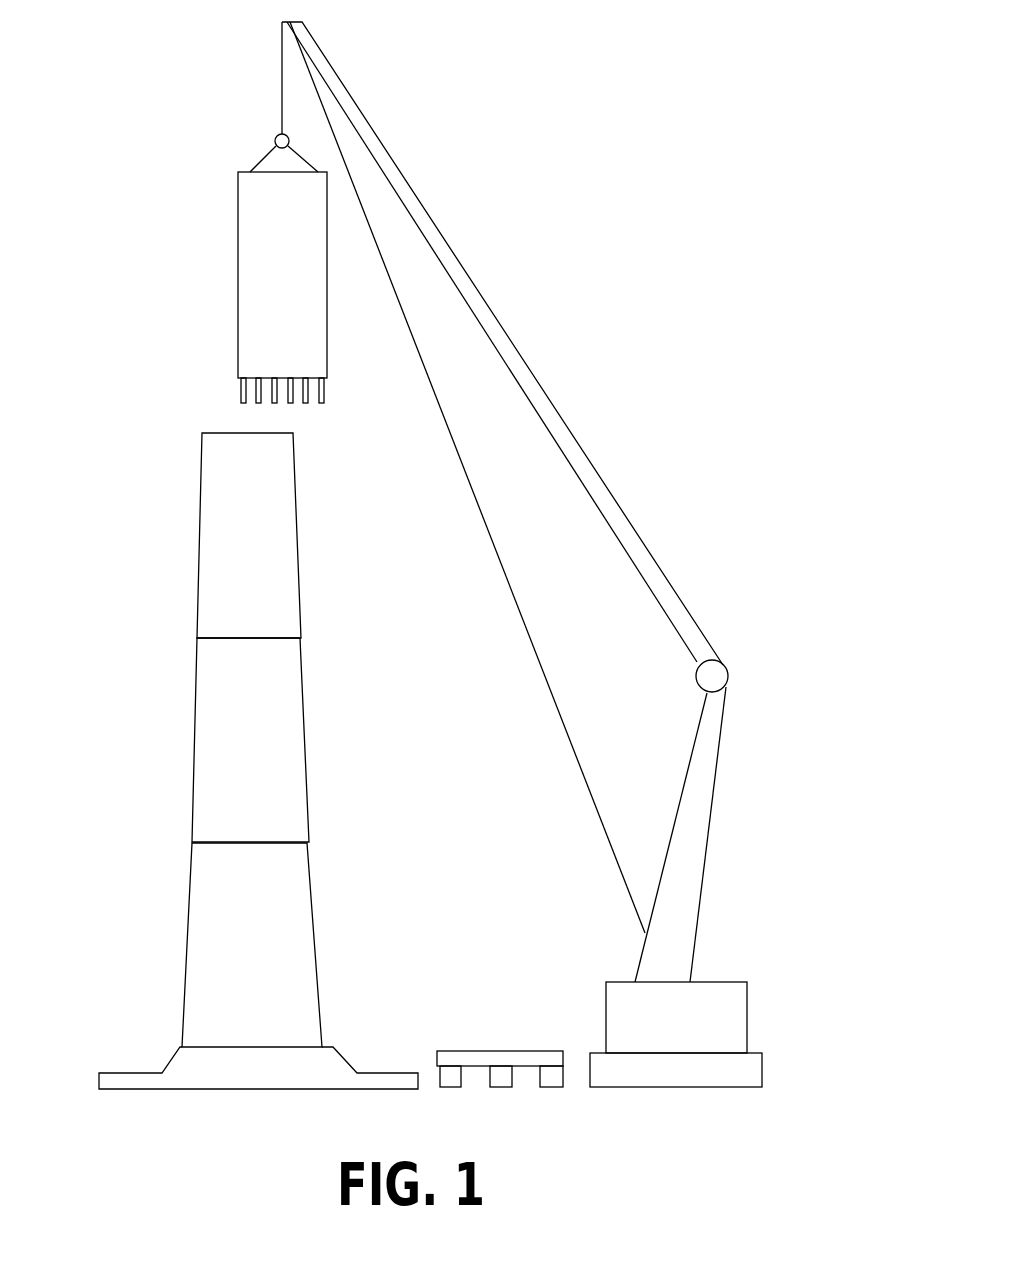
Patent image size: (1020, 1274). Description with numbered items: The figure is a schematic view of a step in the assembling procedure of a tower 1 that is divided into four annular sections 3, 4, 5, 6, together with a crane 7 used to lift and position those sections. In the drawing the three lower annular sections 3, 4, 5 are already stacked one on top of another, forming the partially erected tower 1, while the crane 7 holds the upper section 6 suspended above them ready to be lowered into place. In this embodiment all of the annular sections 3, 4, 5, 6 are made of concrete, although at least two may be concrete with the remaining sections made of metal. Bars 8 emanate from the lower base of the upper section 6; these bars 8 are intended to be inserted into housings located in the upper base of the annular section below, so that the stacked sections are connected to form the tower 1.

The tower 1 is at (158, 721).
The annular section 3 is at (288, 983).
The annular section 4 is at (277, 769).
The annular section 5 is at (264, 578).
The upper section 6 is at (273, 295).
The crane 7 is at (525, 379).
The bars 8 is at (325, 392).